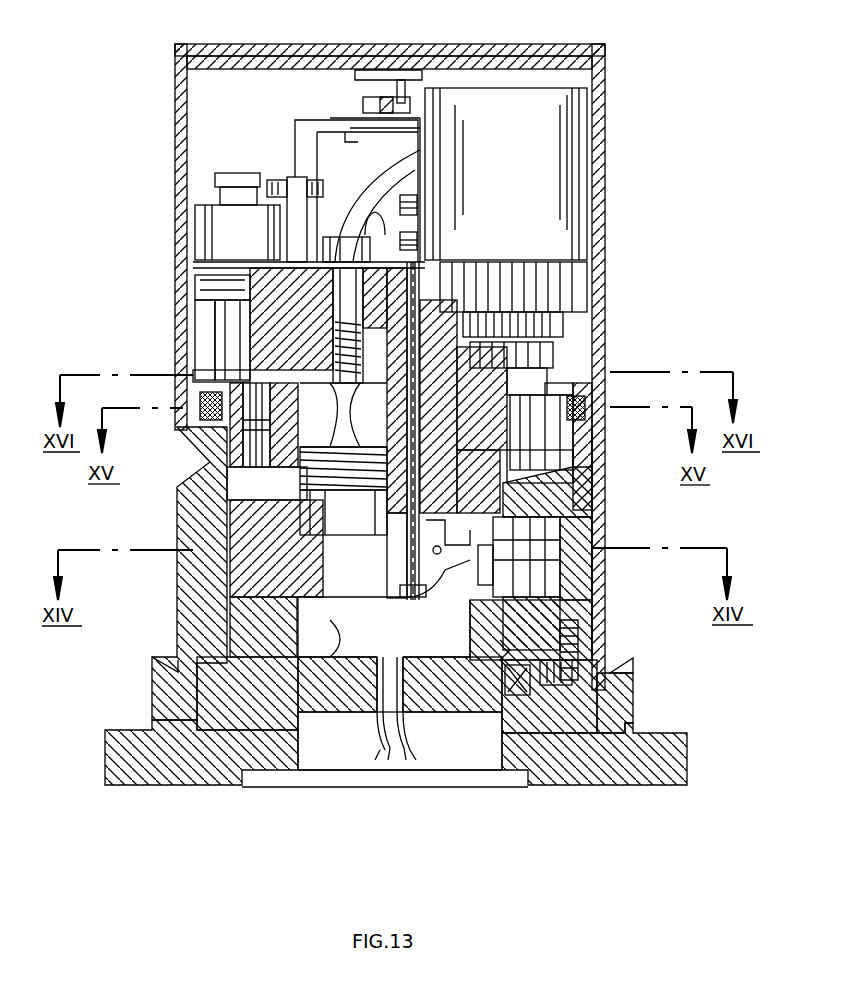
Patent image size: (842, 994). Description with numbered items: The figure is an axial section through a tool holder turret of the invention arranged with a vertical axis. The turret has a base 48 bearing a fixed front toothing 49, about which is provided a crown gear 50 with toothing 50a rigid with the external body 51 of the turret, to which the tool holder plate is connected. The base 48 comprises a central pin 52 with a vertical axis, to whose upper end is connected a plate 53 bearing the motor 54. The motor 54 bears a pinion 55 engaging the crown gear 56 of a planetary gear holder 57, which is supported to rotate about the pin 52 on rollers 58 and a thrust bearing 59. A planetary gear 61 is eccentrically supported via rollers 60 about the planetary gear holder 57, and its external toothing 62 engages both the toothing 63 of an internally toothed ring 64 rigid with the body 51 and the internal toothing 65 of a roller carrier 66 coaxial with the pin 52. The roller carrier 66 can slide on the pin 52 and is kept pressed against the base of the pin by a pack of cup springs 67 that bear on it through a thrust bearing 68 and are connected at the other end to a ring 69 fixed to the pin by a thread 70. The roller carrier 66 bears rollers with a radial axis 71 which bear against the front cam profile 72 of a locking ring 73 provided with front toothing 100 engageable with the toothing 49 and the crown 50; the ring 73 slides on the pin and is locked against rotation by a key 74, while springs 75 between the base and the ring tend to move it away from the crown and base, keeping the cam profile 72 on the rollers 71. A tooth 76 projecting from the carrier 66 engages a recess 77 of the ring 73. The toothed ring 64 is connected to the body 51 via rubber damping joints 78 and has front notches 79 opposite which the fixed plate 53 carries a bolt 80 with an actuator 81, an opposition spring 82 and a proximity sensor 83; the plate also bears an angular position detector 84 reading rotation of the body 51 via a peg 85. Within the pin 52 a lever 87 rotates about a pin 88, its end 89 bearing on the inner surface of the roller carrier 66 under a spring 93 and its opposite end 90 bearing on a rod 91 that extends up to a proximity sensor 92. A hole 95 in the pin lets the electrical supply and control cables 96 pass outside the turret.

The base 48 is at (172, 785).
The fixed front toothing 49 is at (535, 690).
The crown gear 50 is at (555, 720).
The toothing 50a is at (628, 668).
The external body 51 is at (585, 565).
The central pin 52 is at (330, 700).
The plate 53 is at (322, 252).
The motor 54 is at (518, 178).
The pinion 55 is at (530, 380).
The crown gear 56 is at (298, 345).
The planetary gear holder 57 is at (495, 355).
The rollers 58 is at (330, 322).
The thrust bearing 59 is at (330, 445).
The rollers 60 is at (566, 395).
The planetary gear 61 is at (570, 450).
The external toothing 62 is at (222, 502).
The toothing 63 is at (228, 445).
The internally toothed ring 64 is at (582, 392).
The internal toothing 65 is at (218, 468).
The roller carrier 66 is at (545, 520).
The pack of cup springs 67 is at (235, 525).
The thrust bearing 68 is at (265, 560).
The ring 69 is at (555, 480).
The thread 70 is at (343, 514).
The rollers with a radial axis 71 is at (520, 540).
The front cam profile 72 is at (260, 585).
The locking ring 73 is at (230, 645).
The key 74 is at (455, 690).
The springs 75 is at (490, 680).
The tooth 76 is at (530, 600).
The recess 77 is at (545, 605).
The damping joints 78 is at (202, 398).
The notches 79 is at (197, 375).
The bolt 80 is at (197, 348).
The actuator 81 is at (200, 232).
The opposition spring 82 is at (197, 300).
The proximity sensor 83 is at (283, 178).
The angular position detector 84 is at (362, 165).
The peg 85 is at (400, 80).
The lever 87 is at (383, 605).
The pin 88 is at (440, 590).
The end 89 is at (425, 665).
The opposite end 90 is at (400, 577).
The rod 91 is at (450, 280).
The proximity sensor 92 is at (418, 243).
The spring 93 is at (420, 530).
The hole 95 is at (358, 690).
The electrical supply and control cables 96 is at (395, 720).
The front toothing 100 is at (165, 680).